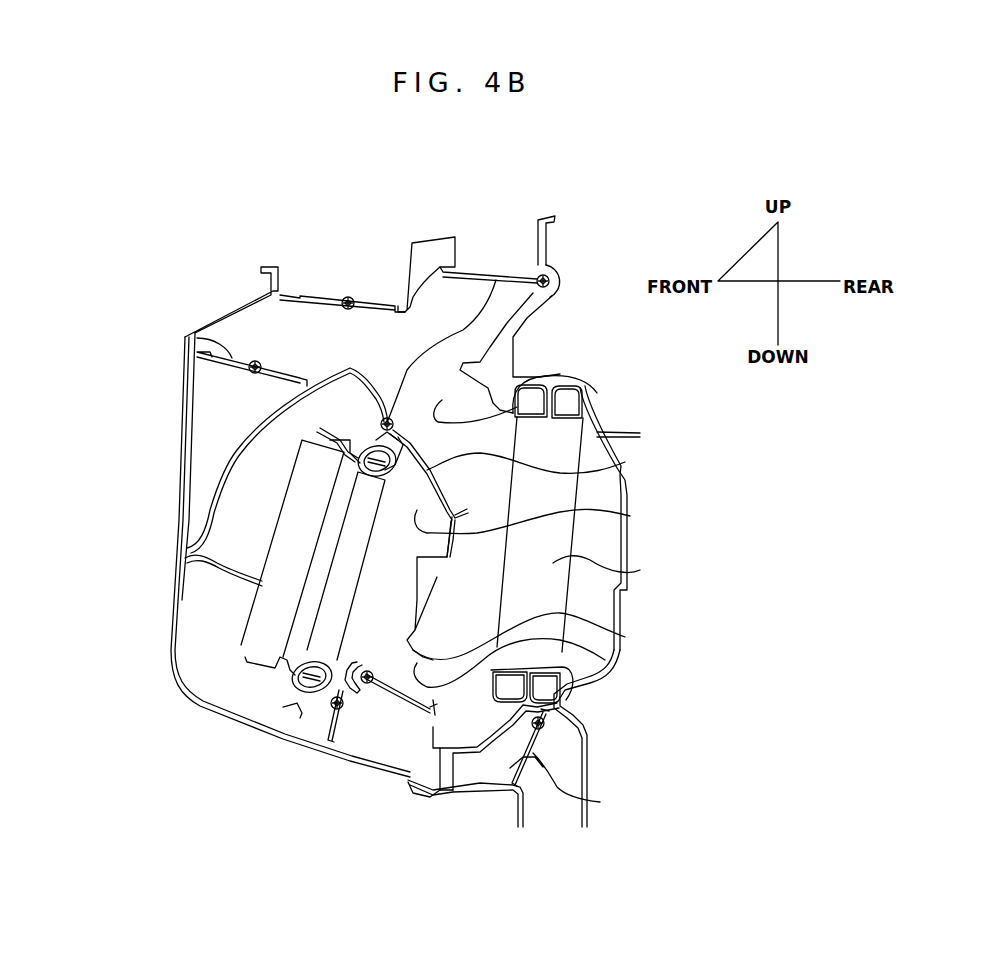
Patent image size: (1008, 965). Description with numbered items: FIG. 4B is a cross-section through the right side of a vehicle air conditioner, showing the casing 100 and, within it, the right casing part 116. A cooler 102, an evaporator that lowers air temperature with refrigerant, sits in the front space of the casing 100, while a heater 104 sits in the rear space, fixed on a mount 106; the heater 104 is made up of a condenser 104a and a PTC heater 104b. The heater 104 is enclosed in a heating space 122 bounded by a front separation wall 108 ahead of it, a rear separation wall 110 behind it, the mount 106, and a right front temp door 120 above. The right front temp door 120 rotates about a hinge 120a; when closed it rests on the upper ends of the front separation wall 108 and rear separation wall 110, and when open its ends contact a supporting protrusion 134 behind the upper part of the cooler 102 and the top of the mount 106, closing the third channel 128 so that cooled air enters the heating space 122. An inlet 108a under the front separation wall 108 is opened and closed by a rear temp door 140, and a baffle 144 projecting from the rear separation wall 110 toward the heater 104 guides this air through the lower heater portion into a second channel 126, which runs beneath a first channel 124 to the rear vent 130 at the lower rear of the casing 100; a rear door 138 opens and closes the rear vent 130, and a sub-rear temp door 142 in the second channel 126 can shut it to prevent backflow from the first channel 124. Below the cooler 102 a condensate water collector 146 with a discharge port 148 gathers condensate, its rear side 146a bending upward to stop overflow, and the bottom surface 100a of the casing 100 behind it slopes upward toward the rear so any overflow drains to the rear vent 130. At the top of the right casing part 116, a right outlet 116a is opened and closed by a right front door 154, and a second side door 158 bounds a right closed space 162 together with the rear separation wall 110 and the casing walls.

The casing 100 is at (217, 522).
The bottom surface of the casing 100a is at (355, 764).
The cooler 102 is at (640, 570).
The heater 104 is at (217, 572).
The condenser 104a is at (248, 689).
The PTC heater 104b is at (262, 623).
The mount 106 is at (331, 432).
The front separation wall 108 is at (625, 637).
The inlet 108a is at (605, 660).
The rear separation wall 110 is at (233, 462).
The right casing part 116 is at (167, 507).
The right outlet 116a is at (389, 306).
The right front temp door 120 is at (625, 462).
The hinge 120a is at (496, 280).
The heating space 122 is at (630, 516).
The first channel 124 is at (573, 688).
The second channel 126 is at (290, 743).
The third channel 128 is at (520, 412).
The rear vent 130 is at (587, 772).
The supporting protrusion 134 is at (515, 410).
The rear door 138 is at (600, 803).
The rear temp door 140 is at (383, 705).
The sub-rear temp door 142 is at (327, 740).
The baffle 144 is at (213, 580).
The condensate water collector 146 is at (527, 760).
The rear side of the condensate water collector 146a is at (432, 793).
The discharge port 148 is at (445, 778).
The right front door 154 is at (327, 296).
The second side door 158 is at (190, 332).
The right closed space 162 is at (232, 407).